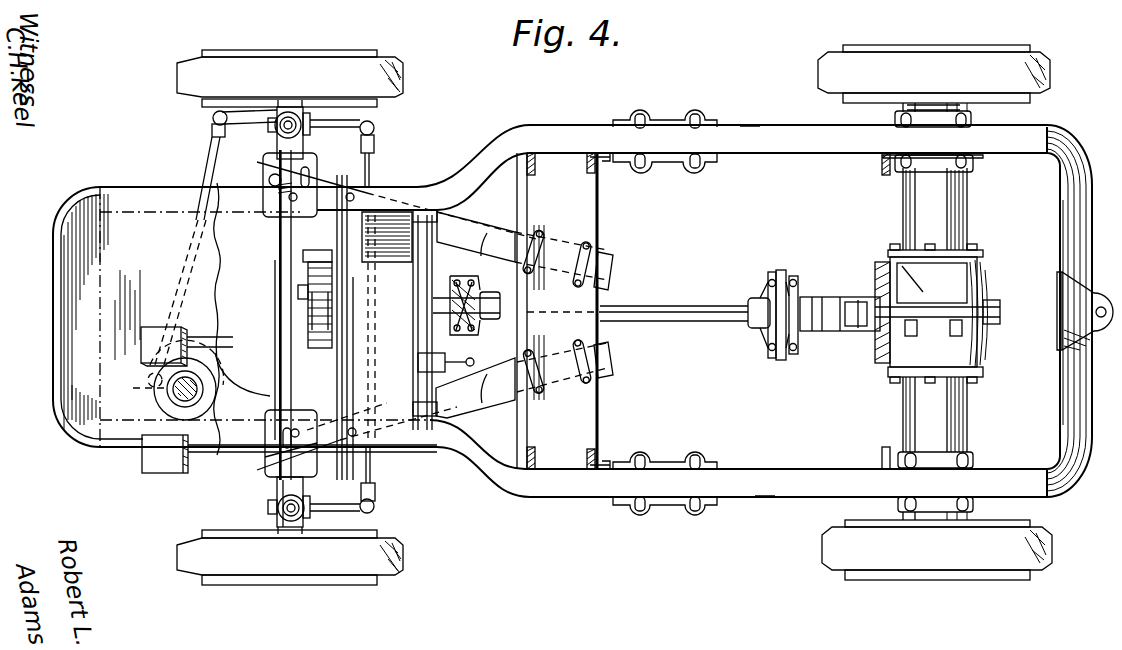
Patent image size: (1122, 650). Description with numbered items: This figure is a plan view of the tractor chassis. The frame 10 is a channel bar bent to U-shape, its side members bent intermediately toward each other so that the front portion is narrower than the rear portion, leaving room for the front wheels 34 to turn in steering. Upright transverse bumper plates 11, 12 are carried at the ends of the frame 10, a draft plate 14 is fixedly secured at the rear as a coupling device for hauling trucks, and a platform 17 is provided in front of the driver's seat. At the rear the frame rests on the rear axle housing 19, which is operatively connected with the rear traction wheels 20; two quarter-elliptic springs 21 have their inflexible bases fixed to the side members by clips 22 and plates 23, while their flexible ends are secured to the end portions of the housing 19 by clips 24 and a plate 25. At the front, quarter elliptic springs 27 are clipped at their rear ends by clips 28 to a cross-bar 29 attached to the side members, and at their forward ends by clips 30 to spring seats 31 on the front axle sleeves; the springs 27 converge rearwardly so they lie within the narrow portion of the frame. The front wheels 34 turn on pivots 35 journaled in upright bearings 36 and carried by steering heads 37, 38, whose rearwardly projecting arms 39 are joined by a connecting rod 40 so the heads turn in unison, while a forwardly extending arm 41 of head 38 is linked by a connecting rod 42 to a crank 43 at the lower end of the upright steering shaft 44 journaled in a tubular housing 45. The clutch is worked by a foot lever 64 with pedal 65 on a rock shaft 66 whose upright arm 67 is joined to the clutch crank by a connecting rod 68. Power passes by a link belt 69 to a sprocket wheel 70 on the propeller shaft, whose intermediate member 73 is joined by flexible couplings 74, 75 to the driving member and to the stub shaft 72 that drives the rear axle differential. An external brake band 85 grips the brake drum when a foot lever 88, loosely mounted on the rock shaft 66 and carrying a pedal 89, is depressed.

The frame 10 is at (545, 125).
The bumper plate 11 is at (56, 404).
The bumper plate 12 is at (1085, 420).
The draft plate 14 is at (1057, 350).
The platform 17 is at (120, 200).
The rear axle housing 19 is at (962, 234).
The rear traction wheel 20 is at (1008, 46).
The quarter-elliptic spring 21 is at (755, 120).
The clip 22 is at (690, 116).
The plate 23 is at (705, 118).
The clip 24 is at (908, 168).
The plate 25 is at (972, 170).
The quarter elliptic spring 27 is at (483, 228).
The clip 28 is at (552, 242).
The cross-bar 29 is at (600, 226).
The clip 30 is at (310, 183).
The spring seat 31 is at (265, 218).
The front wheel 34 is at (392, 53).
The pivot 35 is at (298, 108).
The bearing 36 is at (280, 108).
The steering head 37 is at (281, 522).
The steering head 38 is at (386, 309).
The arm 39 is at (345, 123).
The connecting rod 40 is at (375, 472).
The arm 41 is at (257, 116).
The connecting rod 42 is at (208, 152).
The crank 43 is at (136, 389).
The steering shaft 44 is at (148, 377).
The tubular housing 45 is at (177, 397).
The foot lever 64 is at (214, 455).
The pedal 65 is at (157, 472).
The rock shaft 66 is at (432, 284).
The upright arm 67 is at (420, 365).
The connecting rod 68 is at (475, 362).
The link belt 69 is at (310, 262).
The sprocket wheel 70 is at (312, 305).
The stub shaft 72 is at (835, 297).
The intermediate member 73 is at (693, 307).
The flexible coupling 74 is at (468, 278).
The flexible coupling 75 is at (760, 340).
The brake band 85 is at (280, 290).
The foot lever 88 is at (241, 382).
The pedal 89 is at (187, 327).